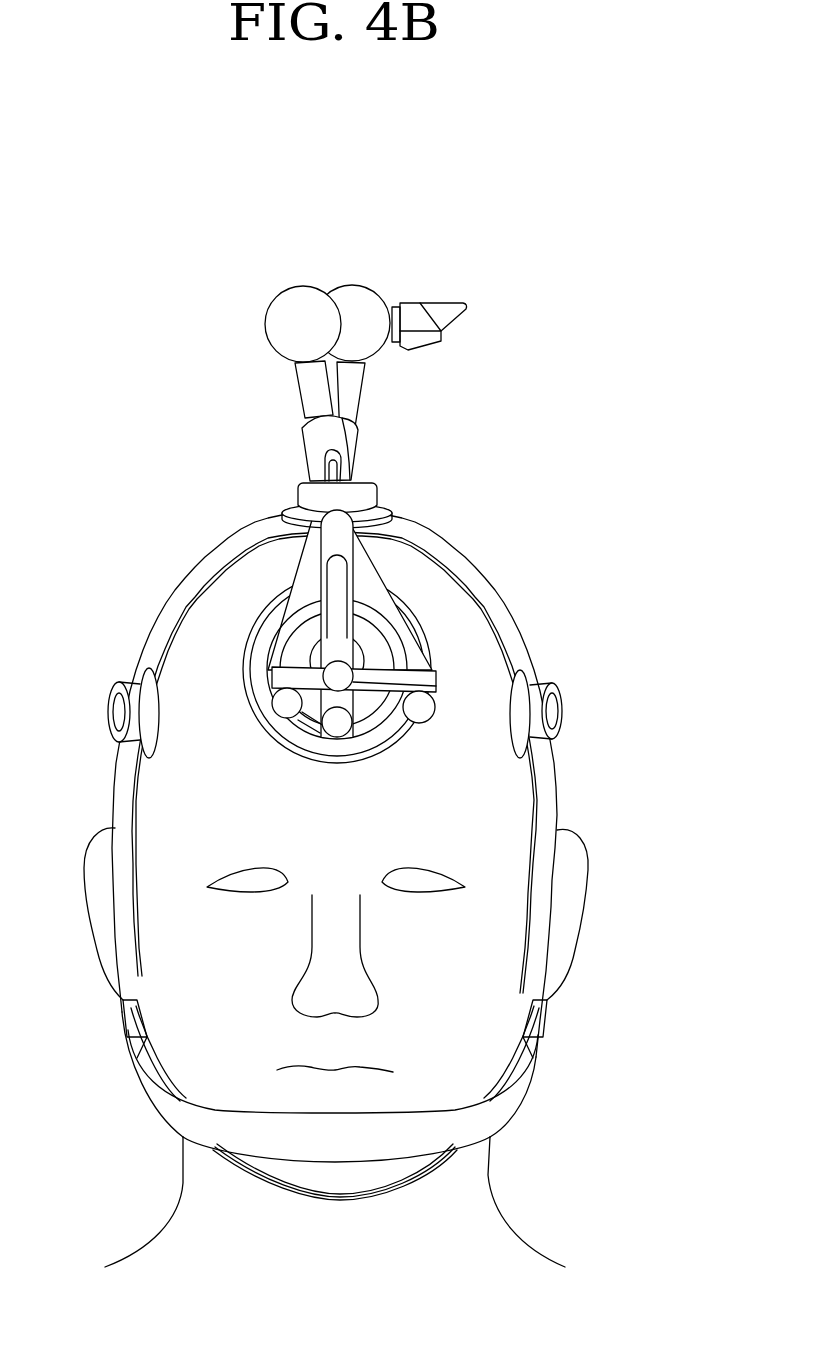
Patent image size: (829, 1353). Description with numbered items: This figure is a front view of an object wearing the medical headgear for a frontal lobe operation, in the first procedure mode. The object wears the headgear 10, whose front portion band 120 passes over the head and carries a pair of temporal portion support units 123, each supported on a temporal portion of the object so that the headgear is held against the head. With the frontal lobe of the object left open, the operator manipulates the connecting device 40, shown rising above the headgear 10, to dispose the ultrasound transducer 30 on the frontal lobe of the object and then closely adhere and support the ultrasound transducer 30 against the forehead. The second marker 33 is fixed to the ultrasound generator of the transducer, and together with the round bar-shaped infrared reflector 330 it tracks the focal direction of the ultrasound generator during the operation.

The headgear 10 is at (346, 856).
The front portion band 120 is at (522, 628).
The temporal portion support units 123 is at (552, 710).
The ultrasound transducer 30 is at (445, 605).
The second marker 33 is at (347, 703).
The round bar-shaped infrared reflector 330 is at (282, 707).
The connecting device 40 is at (265, 388).